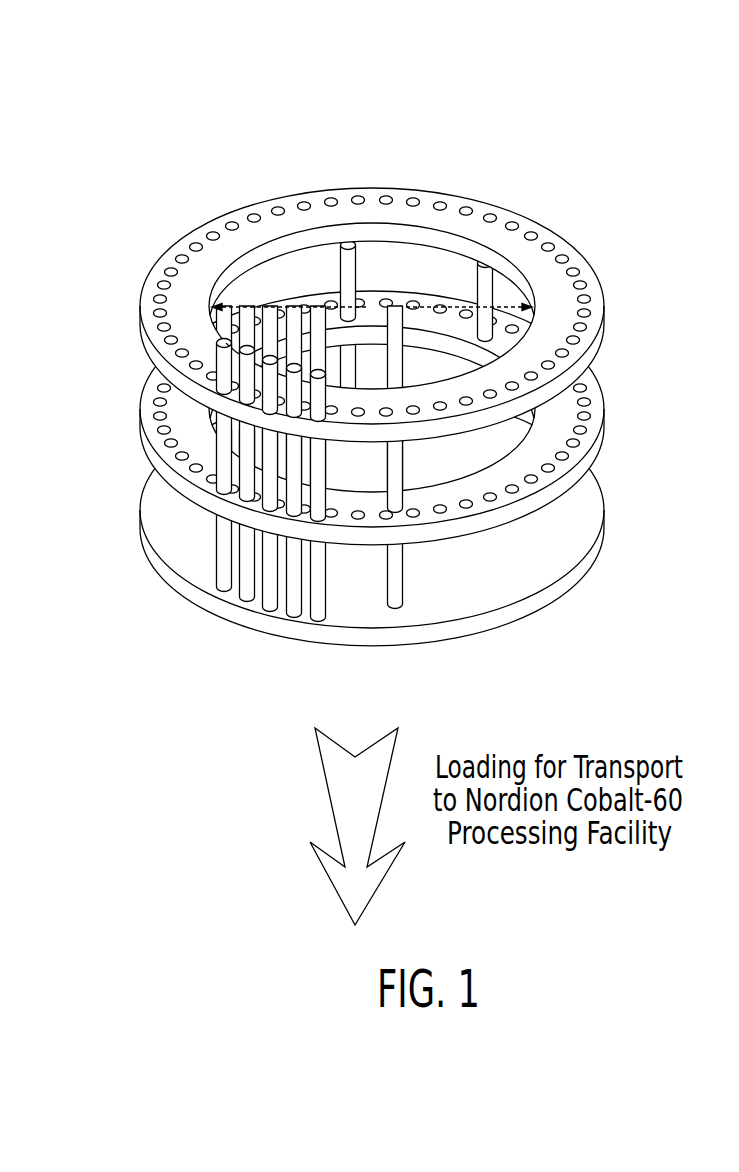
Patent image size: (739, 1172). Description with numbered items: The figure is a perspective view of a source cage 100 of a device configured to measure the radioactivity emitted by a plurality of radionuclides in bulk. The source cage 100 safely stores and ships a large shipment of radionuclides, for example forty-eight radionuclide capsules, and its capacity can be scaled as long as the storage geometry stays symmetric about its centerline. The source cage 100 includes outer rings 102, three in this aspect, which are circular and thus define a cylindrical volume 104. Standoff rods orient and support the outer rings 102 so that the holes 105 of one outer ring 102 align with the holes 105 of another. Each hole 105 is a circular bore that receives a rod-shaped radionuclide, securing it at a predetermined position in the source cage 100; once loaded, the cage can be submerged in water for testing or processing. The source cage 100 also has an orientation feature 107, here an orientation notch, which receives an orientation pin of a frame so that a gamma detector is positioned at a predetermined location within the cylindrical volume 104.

The source cage 100 is at (355, 364).
The outer ring 102 is at (331, 284).
The volume 104 is at (283, 283).
The holes 105 is at (144, 310).
The orientation feature 107 is at (303, 245).